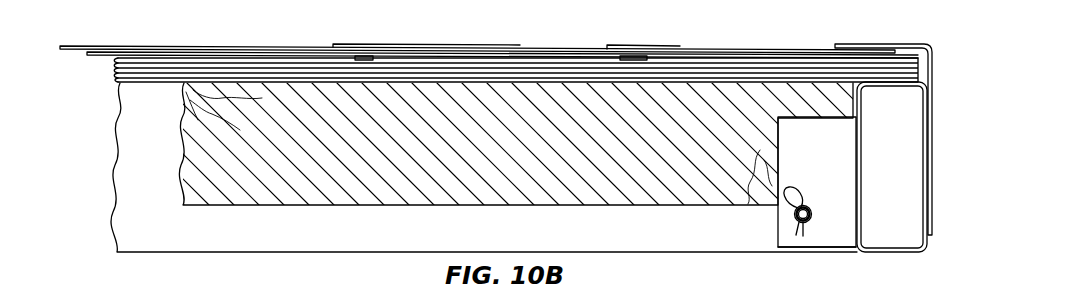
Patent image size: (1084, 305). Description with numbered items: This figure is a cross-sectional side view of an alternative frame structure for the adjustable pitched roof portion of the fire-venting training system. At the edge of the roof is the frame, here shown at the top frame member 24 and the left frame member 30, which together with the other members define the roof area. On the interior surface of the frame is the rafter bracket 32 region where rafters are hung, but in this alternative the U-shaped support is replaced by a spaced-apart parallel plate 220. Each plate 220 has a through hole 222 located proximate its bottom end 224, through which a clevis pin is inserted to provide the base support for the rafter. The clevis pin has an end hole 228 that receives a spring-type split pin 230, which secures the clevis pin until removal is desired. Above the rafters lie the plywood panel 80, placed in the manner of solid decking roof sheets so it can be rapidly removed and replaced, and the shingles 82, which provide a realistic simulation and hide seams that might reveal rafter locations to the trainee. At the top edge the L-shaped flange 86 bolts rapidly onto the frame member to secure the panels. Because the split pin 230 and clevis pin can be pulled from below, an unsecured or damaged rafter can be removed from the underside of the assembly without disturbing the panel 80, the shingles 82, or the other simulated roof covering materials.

The top frame member 24 is at (900, 234).
The left frame member 30 is at (224, 235).
The rafter bracket 32 is at (421, 160).
The plywood panel 80 is at (350, 68).
The shingles 82 is at (541, 56).
The L-shaped flange 86 is at (903, 45).
The parallel plate 220 is at (841, 154).
The through hole 222 is at (810, 202).
The bottom end 224 is at (802, 248).
The end hole 228 is at (807, 222).
The spring-type split pin 230 is at (792, 204).